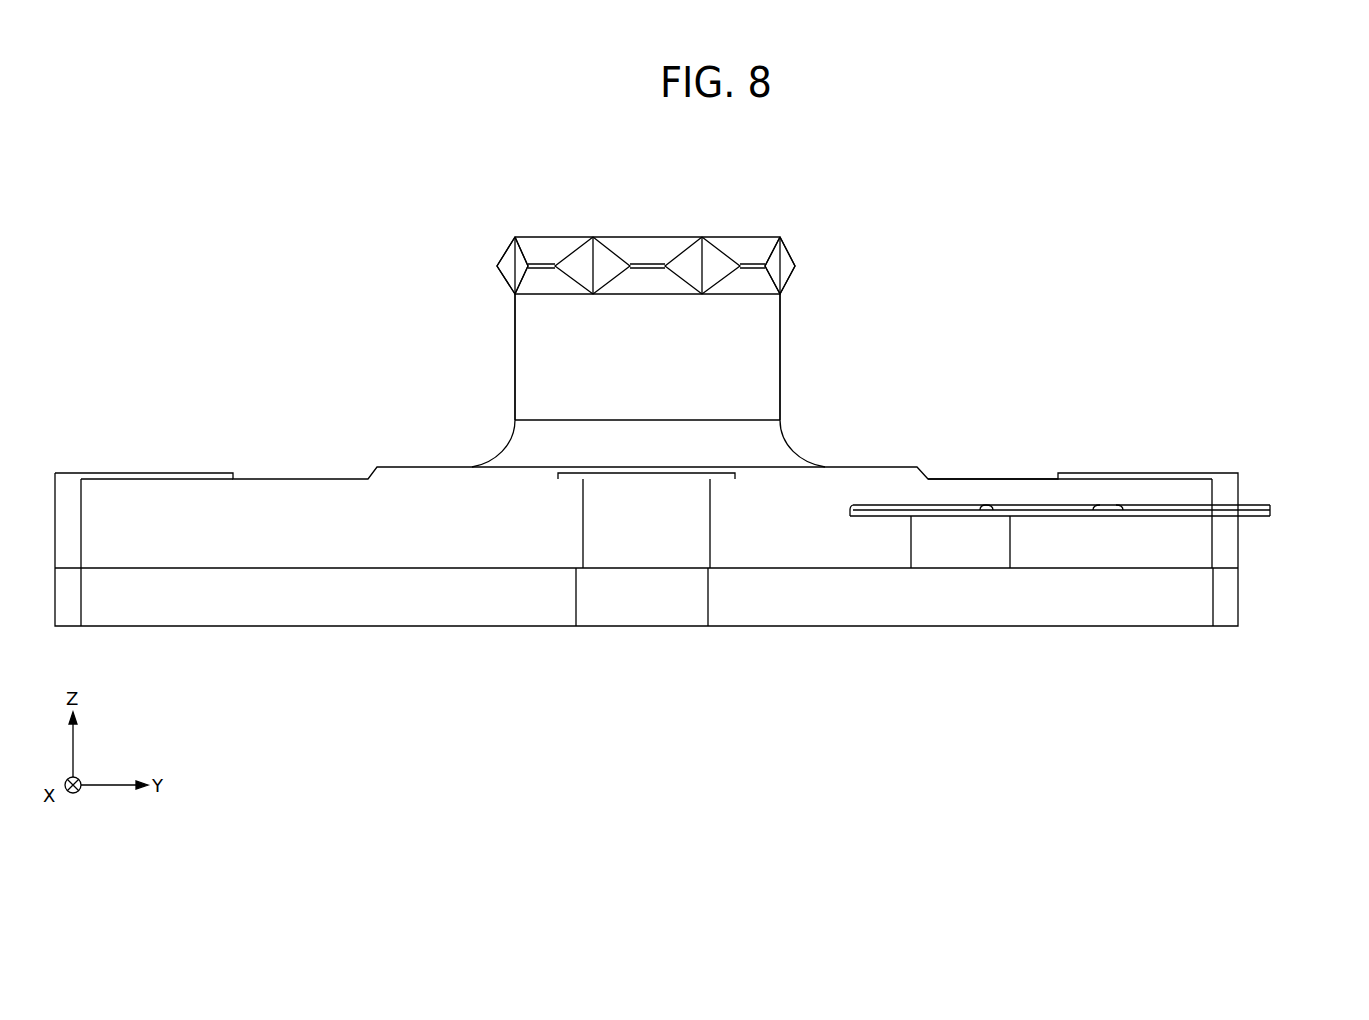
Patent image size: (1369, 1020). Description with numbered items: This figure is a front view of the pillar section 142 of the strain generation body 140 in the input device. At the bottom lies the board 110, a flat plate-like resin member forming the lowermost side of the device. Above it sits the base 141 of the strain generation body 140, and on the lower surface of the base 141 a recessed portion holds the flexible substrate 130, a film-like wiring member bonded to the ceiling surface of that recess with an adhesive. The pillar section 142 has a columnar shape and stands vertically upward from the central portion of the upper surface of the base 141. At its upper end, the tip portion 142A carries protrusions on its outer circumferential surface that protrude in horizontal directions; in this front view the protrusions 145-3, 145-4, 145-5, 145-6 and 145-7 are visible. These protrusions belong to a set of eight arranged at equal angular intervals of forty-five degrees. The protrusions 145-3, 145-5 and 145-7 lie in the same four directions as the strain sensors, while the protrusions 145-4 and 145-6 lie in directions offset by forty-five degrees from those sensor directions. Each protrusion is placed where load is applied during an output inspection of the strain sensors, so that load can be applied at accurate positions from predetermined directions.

The board 110 is at (1240, 594).
The flexible substrate 130 is at (1273, 510).
The strain generation body 140 is at (790, 368).
The base 141 is at (1240, 490).
The pillar section 142 is at (514, 352).
The tip portion 142A is at (796, 238).
The protrusion 145-3 is at (795, 266).
The protrusion 145-4 is at (749, 250).
The protrusion 145-5 is at (643, 250).
The protrusion 145-6 is at (543, 250).
The protrusion 145-7 is at (497, 266).